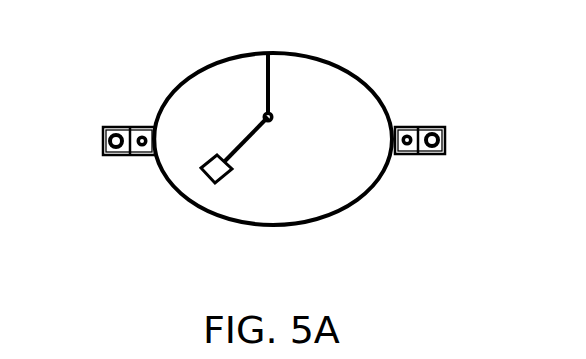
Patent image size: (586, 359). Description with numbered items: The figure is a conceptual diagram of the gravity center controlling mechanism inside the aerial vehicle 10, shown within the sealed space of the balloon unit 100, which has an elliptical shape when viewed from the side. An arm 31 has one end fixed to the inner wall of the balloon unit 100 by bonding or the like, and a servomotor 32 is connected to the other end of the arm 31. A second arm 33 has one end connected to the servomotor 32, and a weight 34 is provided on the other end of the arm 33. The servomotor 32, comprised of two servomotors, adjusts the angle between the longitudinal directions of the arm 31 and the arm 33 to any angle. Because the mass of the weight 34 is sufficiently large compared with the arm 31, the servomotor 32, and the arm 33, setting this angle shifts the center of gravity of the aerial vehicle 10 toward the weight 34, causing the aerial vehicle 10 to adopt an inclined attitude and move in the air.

The aerial vehicle 10 is at (147, 88).
The balloon unit 100 is at (389, 109).
The arm 31 is at (273, 73).
The servomotor 32 is at (274, 117).
The arm 33 is at (223, 150).
The weight 34 is at (205, 172).